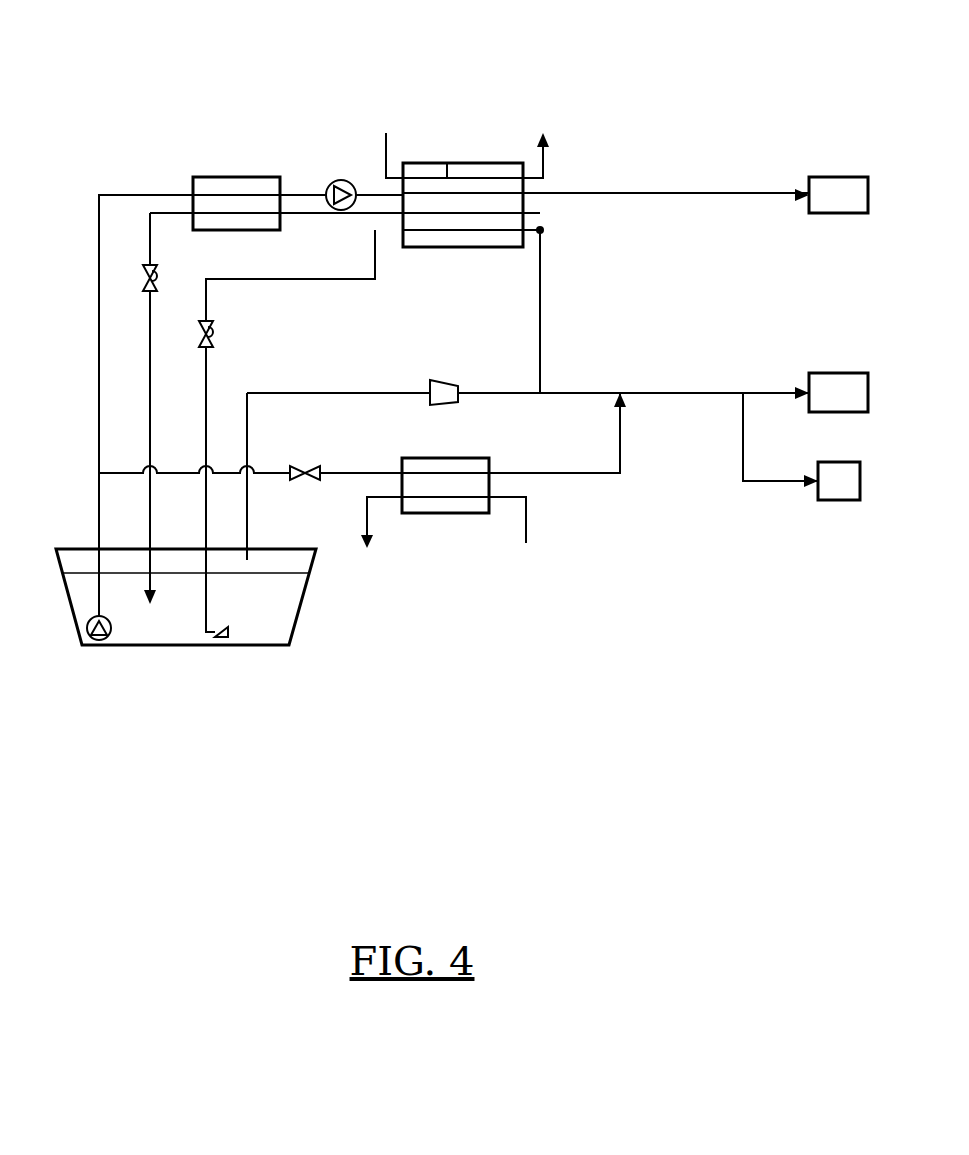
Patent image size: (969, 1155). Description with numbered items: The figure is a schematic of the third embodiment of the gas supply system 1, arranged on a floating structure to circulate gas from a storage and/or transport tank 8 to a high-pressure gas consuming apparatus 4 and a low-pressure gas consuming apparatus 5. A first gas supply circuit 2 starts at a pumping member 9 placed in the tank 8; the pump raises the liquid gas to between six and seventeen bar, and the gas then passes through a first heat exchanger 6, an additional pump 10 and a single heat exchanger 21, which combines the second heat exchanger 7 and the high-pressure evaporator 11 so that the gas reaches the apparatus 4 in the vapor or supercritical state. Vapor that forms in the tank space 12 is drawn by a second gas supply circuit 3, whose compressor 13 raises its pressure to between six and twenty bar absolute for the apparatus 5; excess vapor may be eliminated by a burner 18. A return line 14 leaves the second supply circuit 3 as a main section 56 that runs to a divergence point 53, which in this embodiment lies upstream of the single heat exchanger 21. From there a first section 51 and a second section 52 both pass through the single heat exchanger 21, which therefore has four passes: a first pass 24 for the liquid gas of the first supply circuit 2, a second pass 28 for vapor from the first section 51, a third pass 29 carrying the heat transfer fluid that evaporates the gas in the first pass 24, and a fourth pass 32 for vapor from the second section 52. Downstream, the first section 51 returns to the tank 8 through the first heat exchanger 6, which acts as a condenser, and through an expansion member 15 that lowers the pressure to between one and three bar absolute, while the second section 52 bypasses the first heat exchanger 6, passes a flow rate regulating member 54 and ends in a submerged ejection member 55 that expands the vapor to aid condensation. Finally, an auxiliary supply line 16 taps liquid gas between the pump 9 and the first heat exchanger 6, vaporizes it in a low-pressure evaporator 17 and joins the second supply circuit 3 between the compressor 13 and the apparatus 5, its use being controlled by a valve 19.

The gas supply system 1 is at (610, 147).
The first gas supply circuit 2 is at (155, 168).
The second gas supply circuit 3 is at (327, 375).
The high-pressure gas consuming apparatus 4 is at (831, 195).
The low-pressure gas consuming apparatus 5 is at (838, 392).
The first heat exchanger 6 is at (237, 177).
The second heat exchanger 7 is at (445, 123).
The storage and/or transport tank 8 is at (200, 645).
The pumping member 9 is at (99, 640).
The additional pump 10 is at (342, 180).
The high-pressure evaporator 11 is at (417, 162).
The tank space 12 is at (81, 563).
The compressor 13 is at (443, 380).
The return line 14 is at (568, 288).
The expansion member 15 is at (157, 276).
The auxiliary supply line 16 is at (113, 458).
The low-pressure evaporator 17 is at (445, 513).
The burner 18 is at (801, 446).
The valve 19 is at (305, 480).
The single heat exchanger 21 is at (596, 173).
The first pass 24 is at (477, 193).
The second pass 28 is at (502, 213).
The third pass 29 is at (447, 163).
The fourth pass 32 is at (486, 230).
The first section 51 is at (305, 213).
The second section 52 is at (377, 253).
The divergence point 53 is at (540, 230).
The flow rate regulating member 54 is at (212, 334).
The ejection member 55 is at (220, 637).
The main section 56 is at (541, 368).